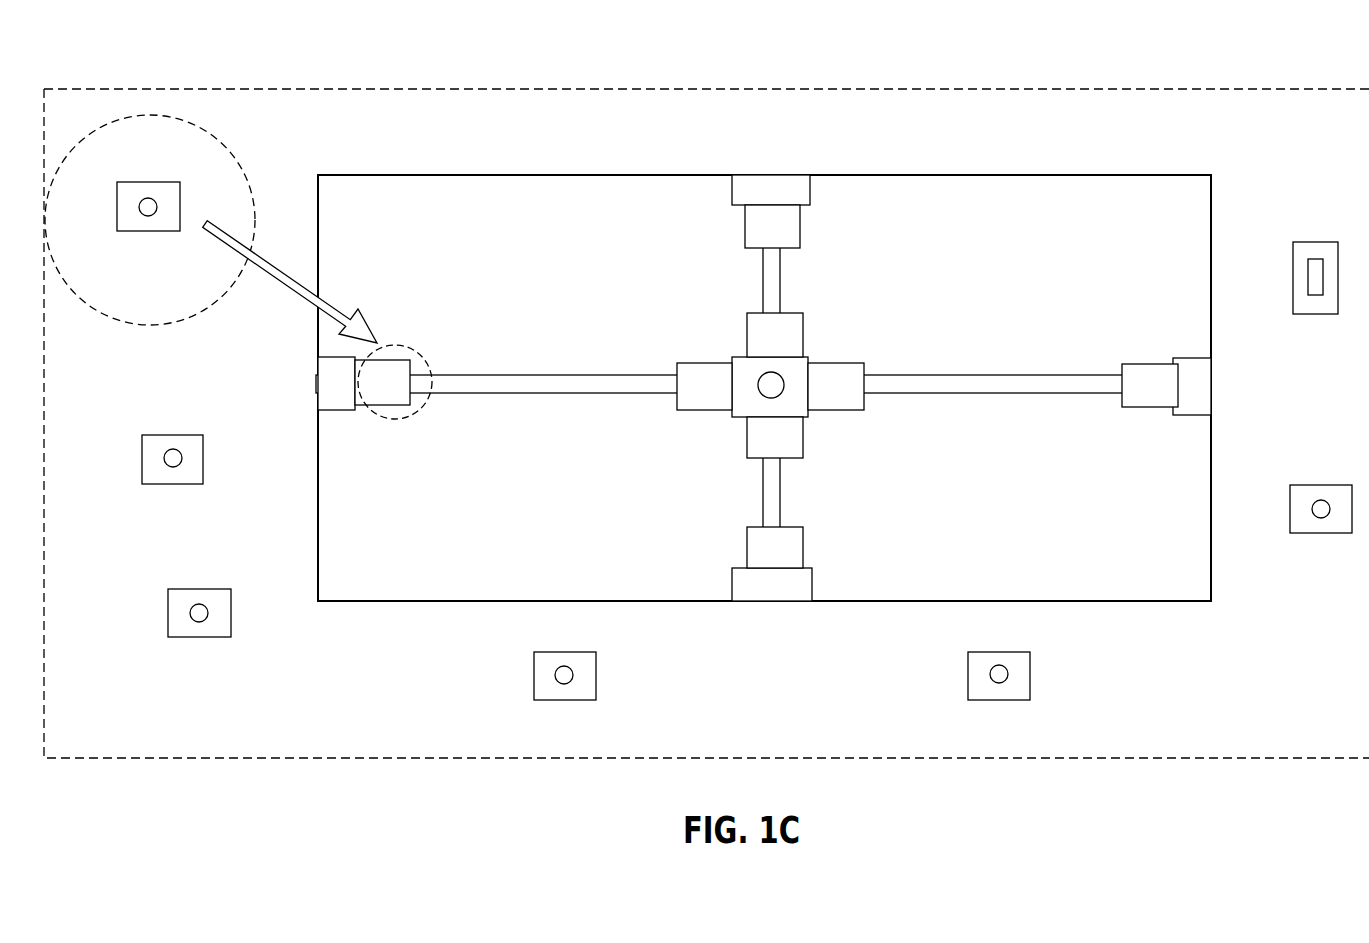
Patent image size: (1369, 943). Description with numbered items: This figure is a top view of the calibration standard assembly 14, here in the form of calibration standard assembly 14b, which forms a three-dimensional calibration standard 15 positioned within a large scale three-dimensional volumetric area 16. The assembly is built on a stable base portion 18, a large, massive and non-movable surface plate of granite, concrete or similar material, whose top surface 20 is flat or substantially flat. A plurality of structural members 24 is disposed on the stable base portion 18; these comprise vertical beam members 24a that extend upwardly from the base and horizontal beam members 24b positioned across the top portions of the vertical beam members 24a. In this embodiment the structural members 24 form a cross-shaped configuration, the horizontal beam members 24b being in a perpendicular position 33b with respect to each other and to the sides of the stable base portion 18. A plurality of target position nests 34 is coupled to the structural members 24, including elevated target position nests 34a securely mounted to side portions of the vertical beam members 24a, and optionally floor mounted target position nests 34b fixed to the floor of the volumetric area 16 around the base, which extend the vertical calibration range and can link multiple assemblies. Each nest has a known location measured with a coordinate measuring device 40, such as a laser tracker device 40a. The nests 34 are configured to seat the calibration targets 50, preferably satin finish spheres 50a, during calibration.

The calibration standard assembly 14 is at (1203, 152).
The calibration standard assembly 14b is at (548, 175).
The three-dimensional calibration standard 15 is at (439, 88).
The large scale three-dimensional volumetric area 16 is at (687, 137).
The stable base portion 18 is at (980, 173).
The top surface 20 is at (1045, 218).
The structural members 24 is at (763, 388).
The vertical beam members 24a is at (345, 410).
The horizontal beam members 24b is at (535, 395).
The perpendicular position 33b is at (728, 350).
The target position nests 34 is at (404, 354).
The elevated target position nests 34a is at (412, 367).
The floor mounted target position nests 34b is at (180, 484).
The coordinate measuring device 40 is at (1313, 238).
The laser tracker device 40a is at (1320, 314).
The calibration targets 50 is at (141, 196).
The satin finish spheres 50a is at (150, 204).